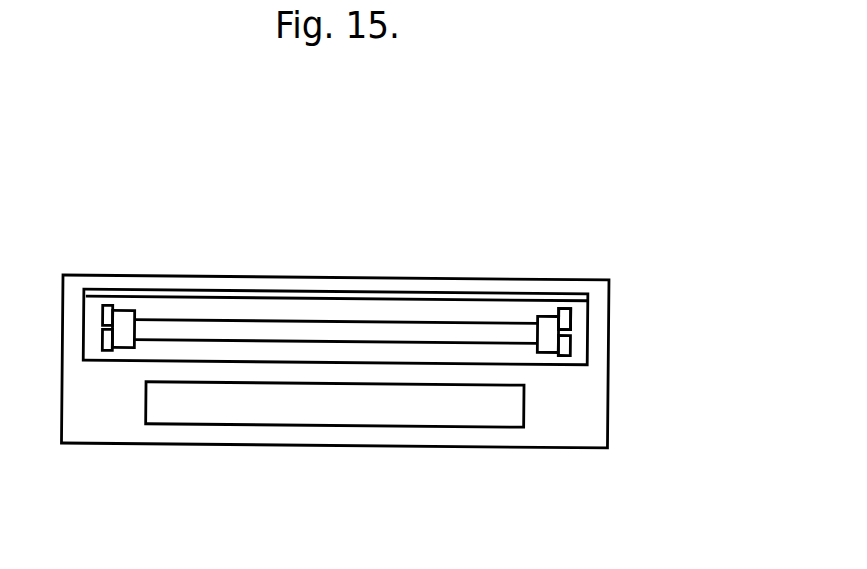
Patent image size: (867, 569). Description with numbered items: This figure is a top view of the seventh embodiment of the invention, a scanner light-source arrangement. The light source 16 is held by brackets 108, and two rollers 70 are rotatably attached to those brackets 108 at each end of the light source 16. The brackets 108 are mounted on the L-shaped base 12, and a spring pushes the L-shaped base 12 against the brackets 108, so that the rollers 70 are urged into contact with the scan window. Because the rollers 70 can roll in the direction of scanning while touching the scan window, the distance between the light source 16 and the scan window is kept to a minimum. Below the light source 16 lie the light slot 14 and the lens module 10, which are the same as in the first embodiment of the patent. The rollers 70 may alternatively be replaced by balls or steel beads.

The lens module 10 is at (85, 422).
The L-shaped base 12 is at (358, 315).
The light slot 14 is at (337, 410).
The light source 16 is at (233, 332).
The rollers 70 is at (655, 282).
The brackets 108 is at (121, 310).